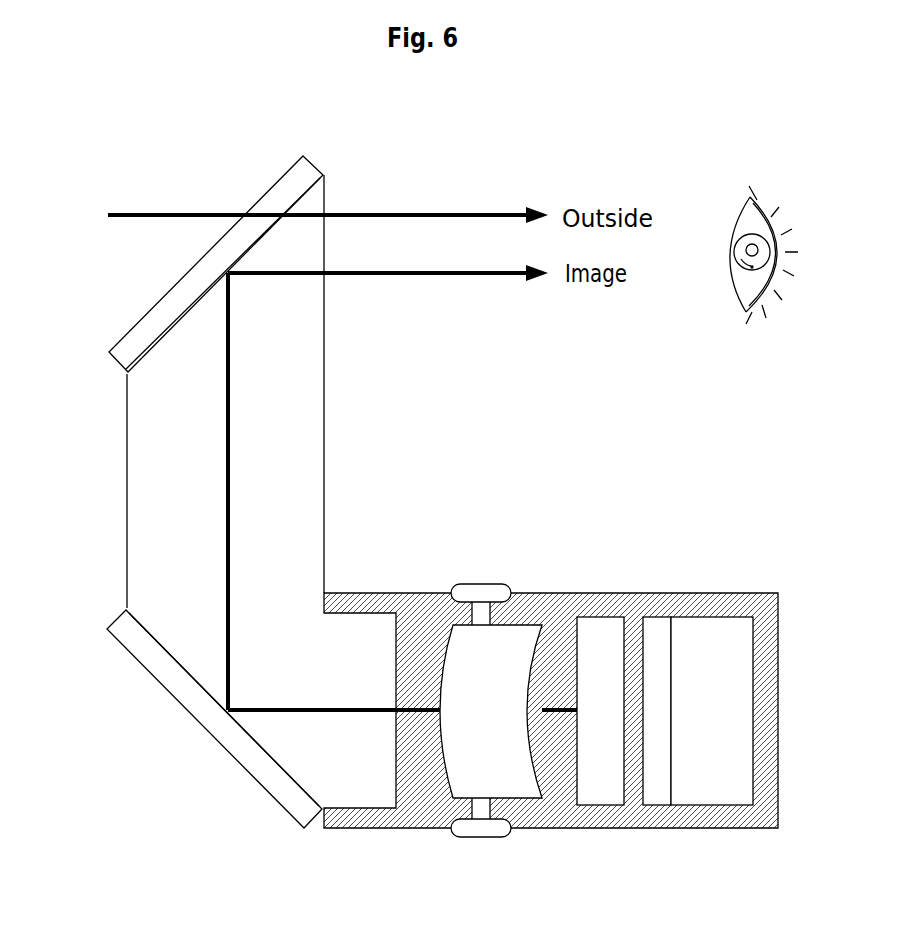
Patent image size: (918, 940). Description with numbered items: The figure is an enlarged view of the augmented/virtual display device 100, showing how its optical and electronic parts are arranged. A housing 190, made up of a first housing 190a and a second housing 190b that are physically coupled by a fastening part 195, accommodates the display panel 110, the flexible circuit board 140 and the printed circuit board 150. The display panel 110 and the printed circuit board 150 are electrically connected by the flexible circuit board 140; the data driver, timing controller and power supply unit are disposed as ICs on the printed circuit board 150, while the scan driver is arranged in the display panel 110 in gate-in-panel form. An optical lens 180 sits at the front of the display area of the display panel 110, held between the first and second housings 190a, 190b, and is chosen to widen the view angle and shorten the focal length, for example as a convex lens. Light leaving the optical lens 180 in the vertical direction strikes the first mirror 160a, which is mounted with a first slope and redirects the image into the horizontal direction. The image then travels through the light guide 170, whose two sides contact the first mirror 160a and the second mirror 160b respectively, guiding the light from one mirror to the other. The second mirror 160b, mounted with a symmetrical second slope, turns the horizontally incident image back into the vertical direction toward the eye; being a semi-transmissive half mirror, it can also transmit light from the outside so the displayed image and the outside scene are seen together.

The augmented/virtual display device 100 is at (776, 517).
The display panel 110 is at (598, 793).
The flexible circuit board 140 is at (655, 793).
The printed circuit board 150 is at (710, 793).
The first mirror 160a is at (150, 659).
The second mirror 160b is at (149, 325).
The light guide 170 is at (138, 492).
The optical lens 180 is at (528, 793).
The housing 190 is at (484, 654).
The first housing 190a is at (528, 605).
The second housing 190b is at (433, 605).
The fastening part 195 is at (468, 837).